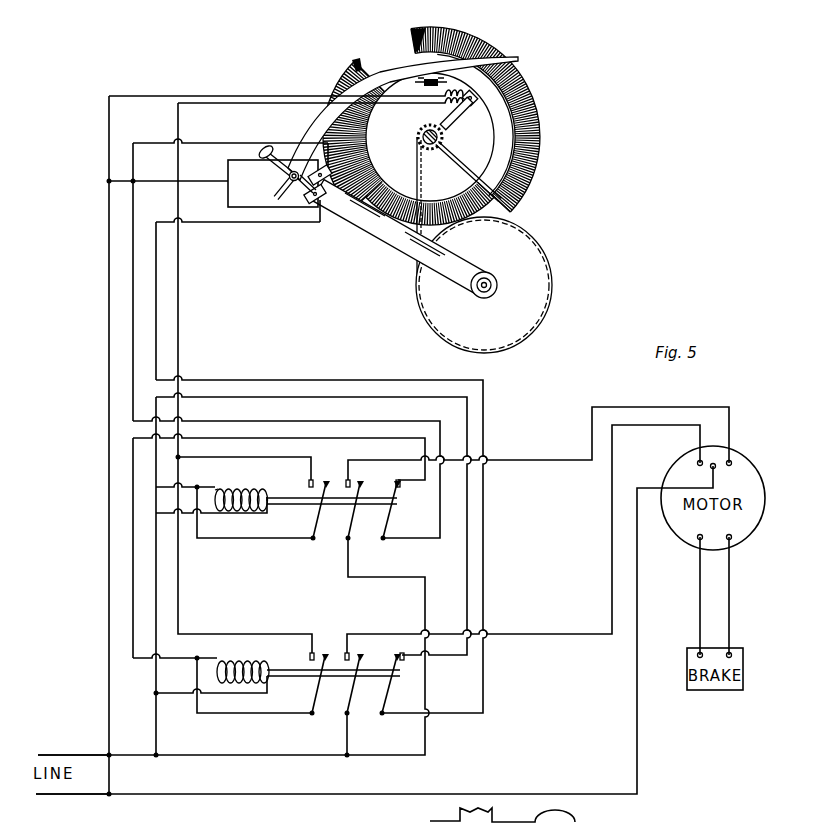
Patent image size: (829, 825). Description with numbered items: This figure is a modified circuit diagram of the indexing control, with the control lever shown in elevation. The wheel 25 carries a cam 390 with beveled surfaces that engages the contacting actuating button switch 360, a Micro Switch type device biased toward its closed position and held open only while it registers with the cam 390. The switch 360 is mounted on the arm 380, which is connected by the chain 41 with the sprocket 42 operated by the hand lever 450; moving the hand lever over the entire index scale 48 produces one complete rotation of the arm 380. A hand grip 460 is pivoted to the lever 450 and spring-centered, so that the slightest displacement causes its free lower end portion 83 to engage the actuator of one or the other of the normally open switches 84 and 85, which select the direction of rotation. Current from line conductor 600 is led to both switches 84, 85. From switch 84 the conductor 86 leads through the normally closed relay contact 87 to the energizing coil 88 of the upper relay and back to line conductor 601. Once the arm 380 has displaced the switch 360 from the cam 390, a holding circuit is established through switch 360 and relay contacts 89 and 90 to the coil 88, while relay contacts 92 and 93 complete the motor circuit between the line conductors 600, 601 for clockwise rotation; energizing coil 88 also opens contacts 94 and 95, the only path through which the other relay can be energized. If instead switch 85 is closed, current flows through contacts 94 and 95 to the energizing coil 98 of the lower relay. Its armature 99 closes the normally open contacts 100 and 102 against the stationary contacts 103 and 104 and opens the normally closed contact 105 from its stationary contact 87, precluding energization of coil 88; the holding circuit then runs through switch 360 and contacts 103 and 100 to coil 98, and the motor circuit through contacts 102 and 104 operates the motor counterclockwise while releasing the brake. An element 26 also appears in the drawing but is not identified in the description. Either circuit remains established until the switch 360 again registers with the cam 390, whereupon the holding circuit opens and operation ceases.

The toothed ring segment 26 is at (447, 42).
The wheel 25 is at (494, 125).
The arm 380 is at (497, 143).
The cam 390 is at (460, 82).
The contacting actuating button switch 360 is at (474, 108).
The chain 41 is at (512, 216).
The sprocket 42 is at (528, 280).
The hand lever 450 is at (413, 250).
The hand grip 460 is at (264, 150).
The alphabetical index 48 is at (316, 133).
The free lower end portion 83 is at (302, 195).
The switch 84 is at (322, 210).
The switch 85 is at (334, 200).
The conductor 86 is at (305, 380).
The energizing coil 88 is at (232, 488).
The relay contact 89 is at (316, 480).
The relay contact 90 is at (320, 506).
The relay contact 92 is at (355, 506).
The relay contact 93 is at (352, 480).
The relay contact 94 is at (400, 488).
The relay contact 95 is at (400, 480).
The energizing coil 98 is at (232, 660).
The armature 99 is at (292, 676).
The normally open contact 100 is at (318, 690).
The normally open contact 102 is at (354, 688).
The stationary contact 103 is at (316, 648).
The stationary contact 104 is at (350, 648).
The stationary contact 87 is at (402, 661).
The normally closed contact 105 is at (386, 692).
The line conductor 600 is at (68, 794).
The line conductor 601 is at (90, 752).